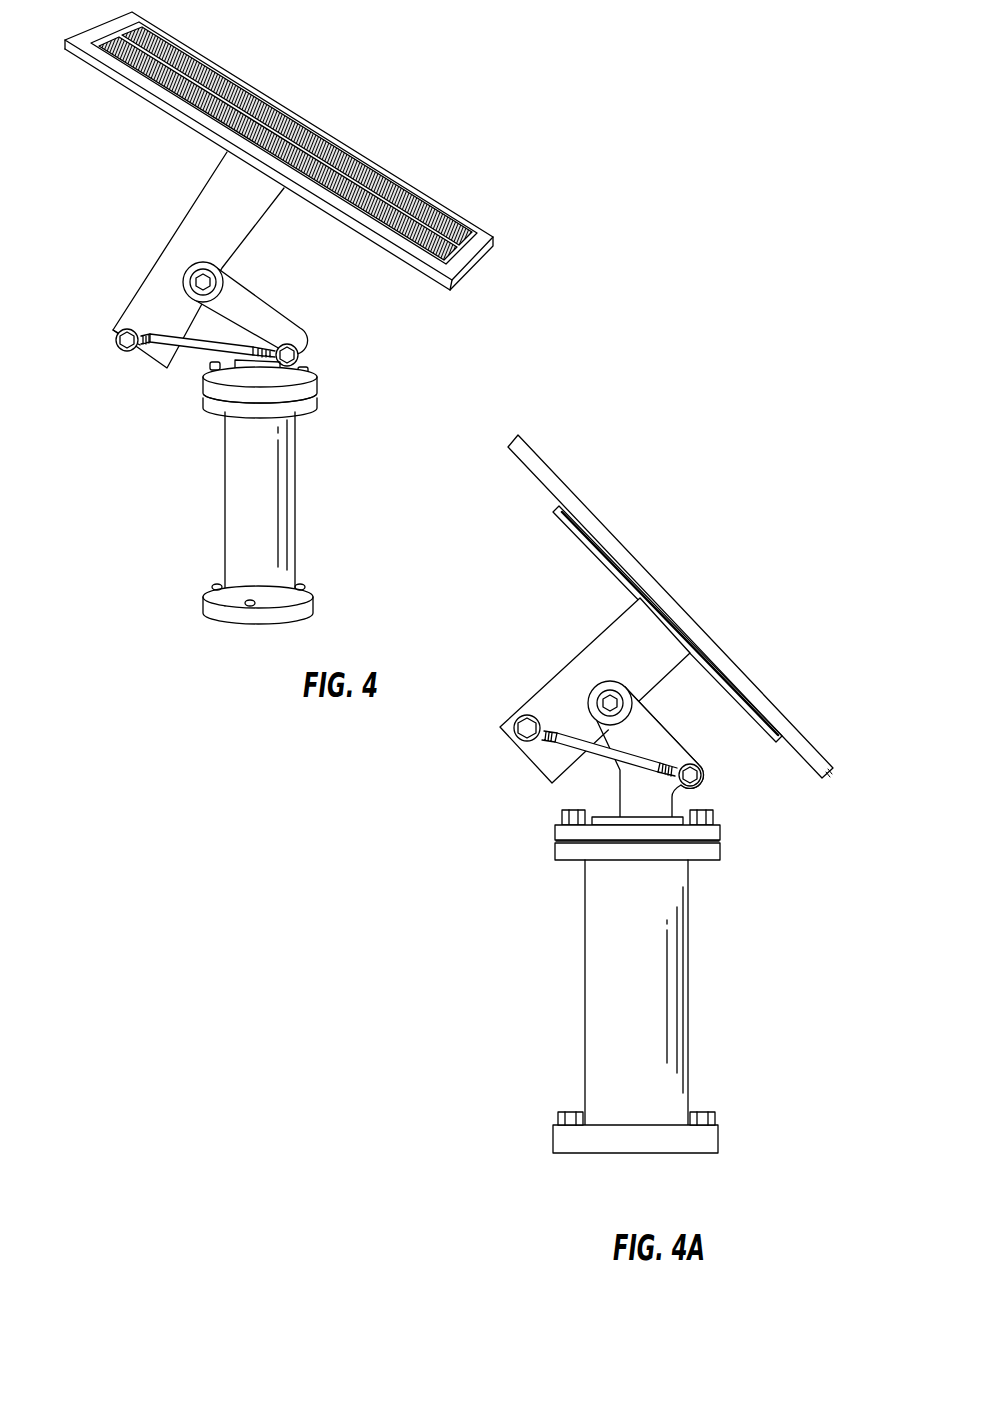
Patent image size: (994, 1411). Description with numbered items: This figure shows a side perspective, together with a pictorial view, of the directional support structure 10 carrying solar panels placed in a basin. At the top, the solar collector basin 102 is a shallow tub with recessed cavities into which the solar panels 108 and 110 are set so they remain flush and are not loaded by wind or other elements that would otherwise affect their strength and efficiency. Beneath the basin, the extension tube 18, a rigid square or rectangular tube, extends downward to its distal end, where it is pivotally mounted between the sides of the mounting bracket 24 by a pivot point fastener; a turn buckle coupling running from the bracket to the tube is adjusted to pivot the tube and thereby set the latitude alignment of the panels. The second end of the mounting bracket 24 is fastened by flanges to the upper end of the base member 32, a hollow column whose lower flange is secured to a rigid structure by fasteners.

In FIG. 4, the directional support structure 10 is at (210, 447).
In FIG. 4, the extension tube 18 is at (198, 198).
In FIG. 4A, the extension tube 18 is at (568, 662).
In FIG. 4, the mounting bracket 24 is at (263, 301).
In FIG. 4A, the mounting bracket 24 is at (672, 752).
In FIG. 4, the base member 32 is at (293, 480).
In FIG. 4A, the base member 32 is at (688, 990).
In FIG. 4, the solar collector basin 102 is at (309, 151).
In FIG. 4A, the solar collector basin 102 is at (833, 768).
In FIG. 4, the solar panel 108 is at (293, 126).
In FIG. 4, the solar panel 110 is at (347, 183).